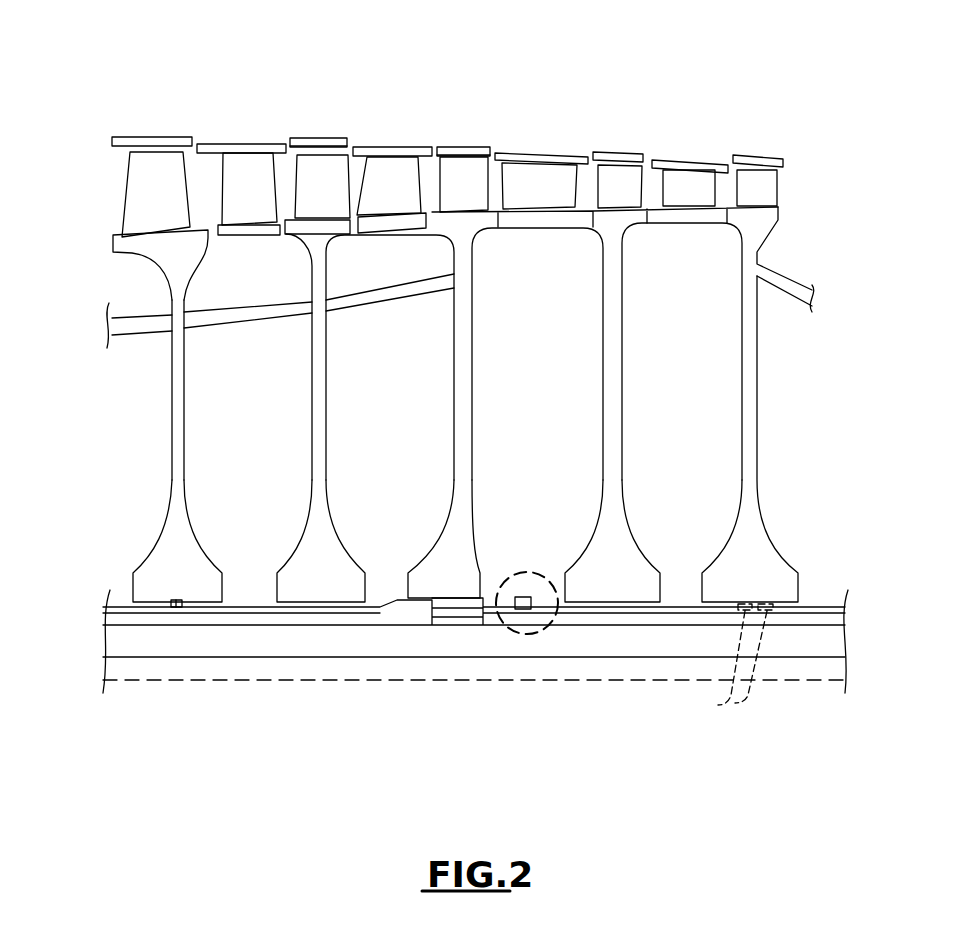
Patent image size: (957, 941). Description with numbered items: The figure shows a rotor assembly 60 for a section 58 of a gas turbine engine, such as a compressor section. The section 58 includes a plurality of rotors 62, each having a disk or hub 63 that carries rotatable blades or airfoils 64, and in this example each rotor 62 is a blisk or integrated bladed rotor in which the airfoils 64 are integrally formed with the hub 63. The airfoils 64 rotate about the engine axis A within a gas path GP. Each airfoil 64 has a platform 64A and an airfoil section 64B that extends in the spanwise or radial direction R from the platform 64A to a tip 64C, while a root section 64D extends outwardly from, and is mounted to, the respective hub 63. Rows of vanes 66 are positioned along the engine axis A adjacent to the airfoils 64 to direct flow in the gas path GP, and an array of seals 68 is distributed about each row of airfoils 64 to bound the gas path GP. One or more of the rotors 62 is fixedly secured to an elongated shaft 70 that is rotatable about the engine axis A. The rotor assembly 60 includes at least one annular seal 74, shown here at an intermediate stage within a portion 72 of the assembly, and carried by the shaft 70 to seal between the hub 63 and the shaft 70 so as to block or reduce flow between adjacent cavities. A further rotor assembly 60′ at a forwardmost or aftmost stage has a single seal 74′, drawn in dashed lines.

The section 58 is at (113, 85).
The gas path GP is at (240, 183).
The vanes 66 is at (240, 143).
The seals 68 is at (303, 139).
The tip 64C is at (320, 148).
The airfoils 64 is at (326, 167).
The airfoil section 64B is at (466, 178).
The platform 64A is at (291, 236).
The root section 64D is at (321, 238).
The hub 63 is at (318, 396).
The rotor 62 is at (410, 507).
The rotor assembly 60 is at (406, 460).
The rotor assembly 60′ is at (131, 518).
The annular seal 74 is at (553, 592).
The seal 74′ is at (178, 607).
The portion 72 is at (523, 634).
The shaft 70 is at (813, 607).
The engine axis A is at (790, 681).
The radial direction R is at (842, 165).